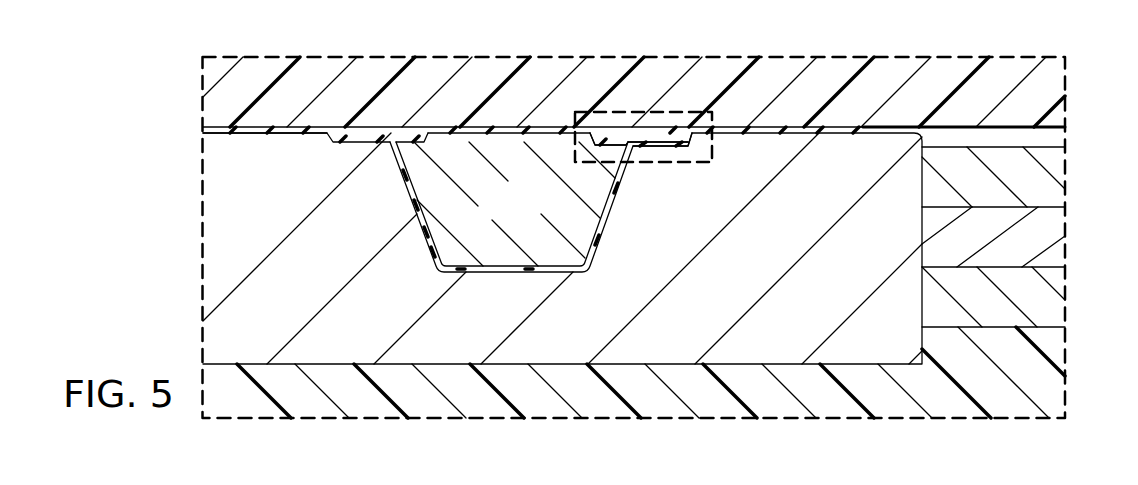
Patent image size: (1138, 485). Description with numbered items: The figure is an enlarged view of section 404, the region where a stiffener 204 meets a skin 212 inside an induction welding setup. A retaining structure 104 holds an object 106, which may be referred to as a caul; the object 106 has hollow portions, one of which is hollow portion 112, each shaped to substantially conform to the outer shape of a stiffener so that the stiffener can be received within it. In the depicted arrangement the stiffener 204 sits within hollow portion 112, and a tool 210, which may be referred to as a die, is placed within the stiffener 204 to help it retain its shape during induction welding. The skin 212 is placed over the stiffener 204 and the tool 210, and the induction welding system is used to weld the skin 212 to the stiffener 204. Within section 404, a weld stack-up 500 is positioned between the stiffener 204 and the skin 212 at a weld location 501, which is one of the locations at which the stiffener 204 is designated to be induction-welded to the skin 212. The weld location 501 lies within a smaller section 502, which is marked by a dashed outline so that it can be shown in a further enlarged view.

The retaining structure 104 is at (774, 264).
The object 106 is at (1011, 136).
The hollow portion 112 is at (541, 238).
The stiffener 204 is at (599, 234).
The tool 210 is at (530, 212).
The skin 212 is at (510, 126).
The section 404 is at (195, 235).
The weld stack-up 500 is at (681, 118).
The weld location 501 is at (652, 152).
The section 502 is at (633, 103).